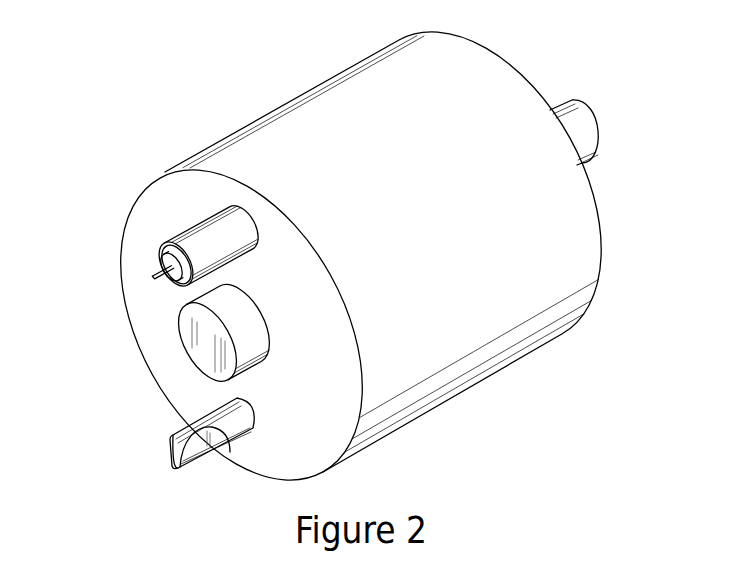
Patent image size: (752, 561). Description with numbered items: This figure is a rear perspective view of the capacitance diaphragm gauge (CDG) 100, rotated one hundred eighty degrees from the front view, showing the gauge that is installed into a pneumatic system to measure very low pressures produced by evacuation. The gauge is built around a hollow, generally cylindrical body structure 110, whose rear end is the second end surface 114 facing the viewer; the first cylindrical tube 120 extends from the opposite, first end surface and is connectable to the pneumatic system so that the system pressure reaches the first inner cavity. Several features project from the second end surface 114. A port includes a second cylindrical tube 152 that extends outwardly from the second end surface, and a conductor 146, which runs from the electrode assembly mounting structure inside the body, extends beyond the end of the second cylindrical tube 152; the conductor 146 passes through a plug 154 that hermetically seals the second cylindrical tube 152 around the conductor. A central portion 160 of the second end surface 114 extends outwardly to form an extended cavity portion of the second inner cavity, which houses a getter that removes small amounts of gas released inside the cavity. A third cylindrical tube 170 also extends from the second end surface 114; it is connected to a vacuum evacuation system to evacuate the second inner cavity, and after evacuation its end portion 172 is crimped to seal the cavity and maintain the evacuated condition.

The capacitance diaphragm gauge (CDG) 100 is at (625, 211).
The cylindrical body structure 110 is at (307, 120).
The second end surface 114 is at (292, 455).
The first cylindrical tube 120 is at (570, 113).
The conductor 146 is at (158, 271).
The second cylindrical tube 152 is at (190, 240).
The plug 154 is at (168, 250).
The central portion 160 is at (192, 328).
The third cylindrical tube 170 is at (223, 417).
The end portion 172 is at (191, 455).